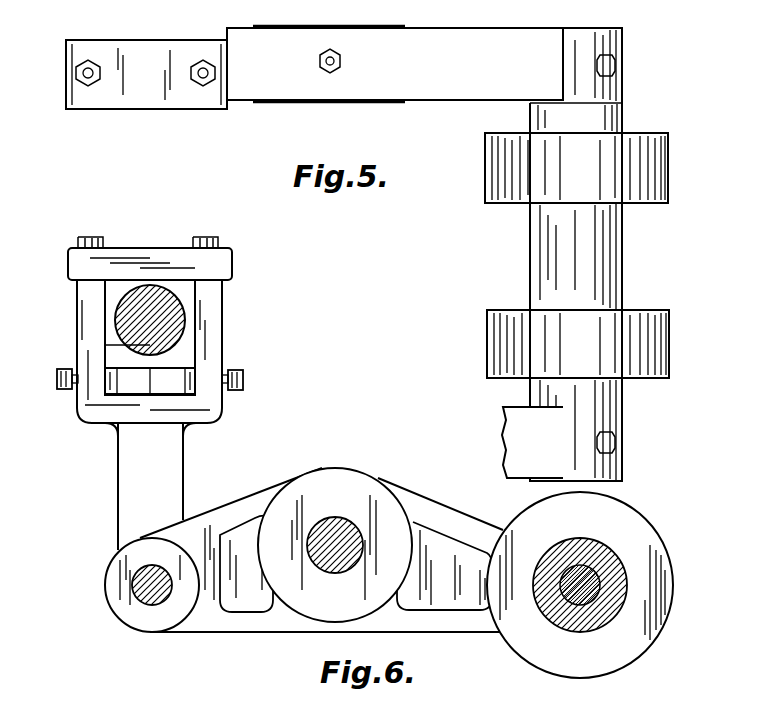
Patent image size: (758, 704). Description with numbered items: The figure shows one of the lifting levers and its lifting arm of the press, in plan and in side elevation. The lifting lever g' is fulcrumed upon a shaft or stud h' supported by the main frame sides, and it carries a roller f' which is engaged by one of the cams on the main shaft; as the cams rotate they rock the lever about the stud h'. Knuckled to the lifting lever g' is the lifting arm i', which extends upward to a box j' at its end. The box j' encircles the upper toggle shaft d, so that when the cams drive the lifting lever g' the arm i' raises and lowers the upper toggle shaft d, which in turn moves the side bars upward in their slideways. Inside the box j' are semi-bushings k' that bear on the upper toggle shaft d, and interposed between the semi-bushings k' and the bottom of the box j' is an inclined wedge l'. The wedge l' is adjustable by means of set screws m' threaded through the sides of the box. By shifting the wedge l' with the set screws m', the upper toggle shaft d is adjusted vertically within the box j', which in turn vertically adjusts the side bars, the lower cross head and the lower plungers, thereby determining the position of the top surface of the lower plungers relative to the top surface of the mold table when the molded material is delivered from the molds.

In FIG. 6, the upper toggle shaft d is at (165, 317).
In FIG. 5, the roller f is at (577, 254).
In FIG. 6, the roller f is at (647, 542).
In FIG. 5, the lifting lever g is at (395, 252).
In FIG. 6, the lifting lever g is at (347, 483).
In FIG. 6, the stud h is at (360, 540).
In FIG. 6, the lifting arm i is at (135, 493).
In FIG. 5, the box j is at (146, 74).
In FIG. 6, the box j is at (195, 343).
In FIG. 6, the semi-bushing k is at (120, 347).
In FIG. 6, the inclined wedge l is at (182, 373).
In FIG. 6, the set screw m is at (265, 393).